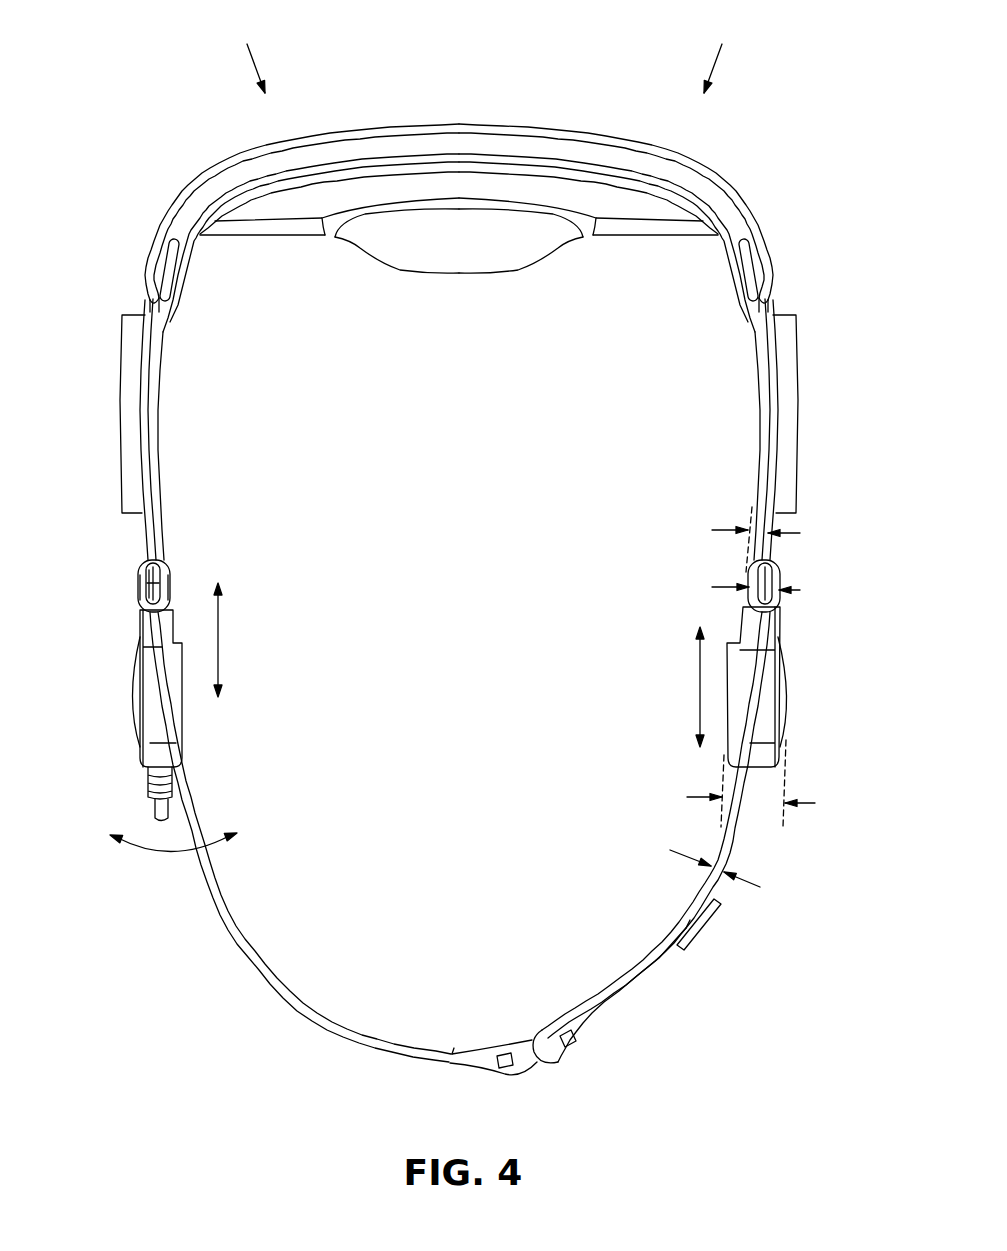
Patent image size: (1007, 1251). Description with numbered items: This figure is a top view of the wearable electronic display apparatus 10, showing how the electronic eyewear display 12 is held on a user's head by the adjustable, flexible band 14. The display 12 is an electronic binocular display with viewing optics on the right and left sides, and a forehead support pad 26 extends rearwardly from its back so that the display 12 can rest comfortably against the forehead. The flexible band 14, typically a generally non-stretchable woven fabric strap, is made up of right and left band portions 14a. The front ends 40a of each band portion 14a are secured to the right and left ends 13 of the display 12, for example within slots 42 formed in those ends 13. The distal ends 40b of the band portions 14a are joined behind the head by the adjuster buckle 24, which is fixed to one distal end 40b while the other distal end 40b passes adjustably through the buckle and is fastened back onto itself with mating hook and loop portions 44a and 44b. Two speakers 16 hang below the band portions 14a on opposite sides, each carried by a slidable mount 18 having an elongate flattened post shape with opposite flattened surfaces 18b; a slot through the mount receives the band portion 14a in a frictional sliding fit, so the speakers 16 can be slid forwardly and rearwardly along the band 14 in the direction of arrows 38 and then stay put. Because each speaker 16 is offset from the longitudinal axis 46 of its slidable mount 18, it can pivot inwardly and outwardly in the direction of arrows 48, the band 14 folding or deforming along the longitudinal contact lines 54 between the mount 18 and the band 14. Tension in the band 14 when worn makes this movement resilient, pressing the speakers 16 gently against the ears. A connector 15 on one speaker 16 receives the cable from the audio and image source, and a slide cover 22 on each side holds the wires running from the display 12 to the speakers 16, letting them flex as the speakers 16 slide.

The wearable electronic display apparatus 10 is at (458, 560).
The electronic eyewear display 12 is at (484, 124).
The ends of display 13 is at (153, 240).
The flexible band 14 is at (302, 1012).
The band portions 14a is at (250, 968).
The connector 15 is at (150, 785).
The speaker 16 is at (128, 700).
The slidable mount 18 is at (138, 590).
The flattened surfaces 18b is at (140, 575).
The slide cover 22 is at (118, 410).
The adjuster buckle 24 is at (566, 1050).
The forehead support pad 26 is at (484, 268).
The arrows 38 is at (222, 638).
The front ends of band portions 40a is at (162, 316).
The distal ends of band portions 40b is at (505, 1077).
The slots 42 is at (148, 272).
The hook and loop portion 44a is at (680, 940).
The hook and loop portion 44b is at (680, 930).
The longitudinal axis of slidable mount 46 is at (165, 595).
The arrows 48 is at (148, 852).
The longitudinal contact lines 54 is at (157, 565).